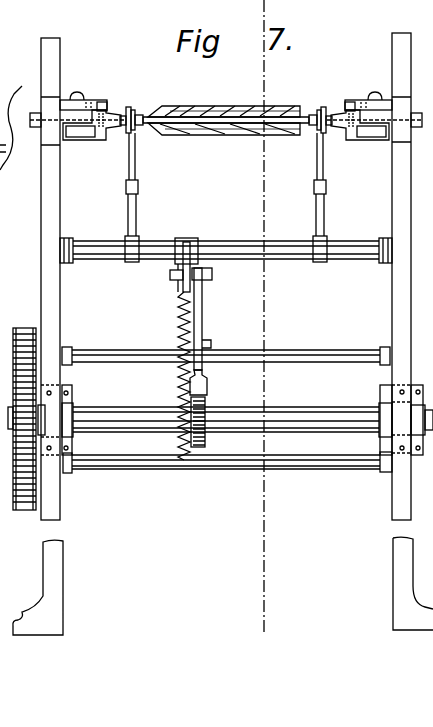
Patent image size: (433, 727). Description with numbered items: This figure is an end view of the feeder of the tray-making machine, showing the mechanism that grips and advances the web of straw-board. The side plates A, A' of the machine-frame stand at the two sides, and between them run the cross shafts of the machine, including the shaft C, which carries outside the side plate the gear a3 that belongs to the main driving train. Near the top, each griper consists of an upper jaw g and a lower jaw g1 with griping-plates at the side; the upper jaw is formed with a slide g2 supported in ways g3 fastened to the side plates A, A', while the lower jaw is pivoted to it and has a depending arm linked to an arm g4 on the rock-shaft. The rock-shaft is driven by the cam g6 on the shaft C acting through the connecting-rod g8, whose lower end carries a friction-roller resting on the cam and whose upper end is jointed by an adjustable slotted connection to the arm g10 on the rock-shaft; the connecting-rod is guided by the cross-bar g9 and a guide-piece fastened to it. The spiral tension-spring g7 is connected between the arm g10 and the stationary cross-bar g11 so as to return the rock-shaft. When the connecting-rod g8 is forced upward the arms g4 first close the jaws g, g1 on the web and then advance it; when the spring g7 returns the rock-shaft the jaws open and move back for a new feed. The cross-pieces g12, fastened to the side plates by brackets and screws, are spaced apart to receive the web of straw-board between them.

The side plate A is at (43, 336).
The side plate A' is at (412, 331).
The shaft C is at (302, 415).
The gear a3 is at (24, 333).
The upper jaw g is at (130, 108).
The lower jaw g1 is at (146, 128).
The slide g2 is at (108, 128).
The ways g3 is at (89, 104).
The arm g4 is at (137, 214).
The cam g6 is at (207, 400).
The spring g7 is at (180, 316).
The connecting-rod g8 is at (202, 312).
The cross-bar g9 is at (128, 358).
The arm g10 is at (178, 270).
The stationary cross-bar g11 is at (178, 465).
The cross-pieces g12 is at (219, 106).